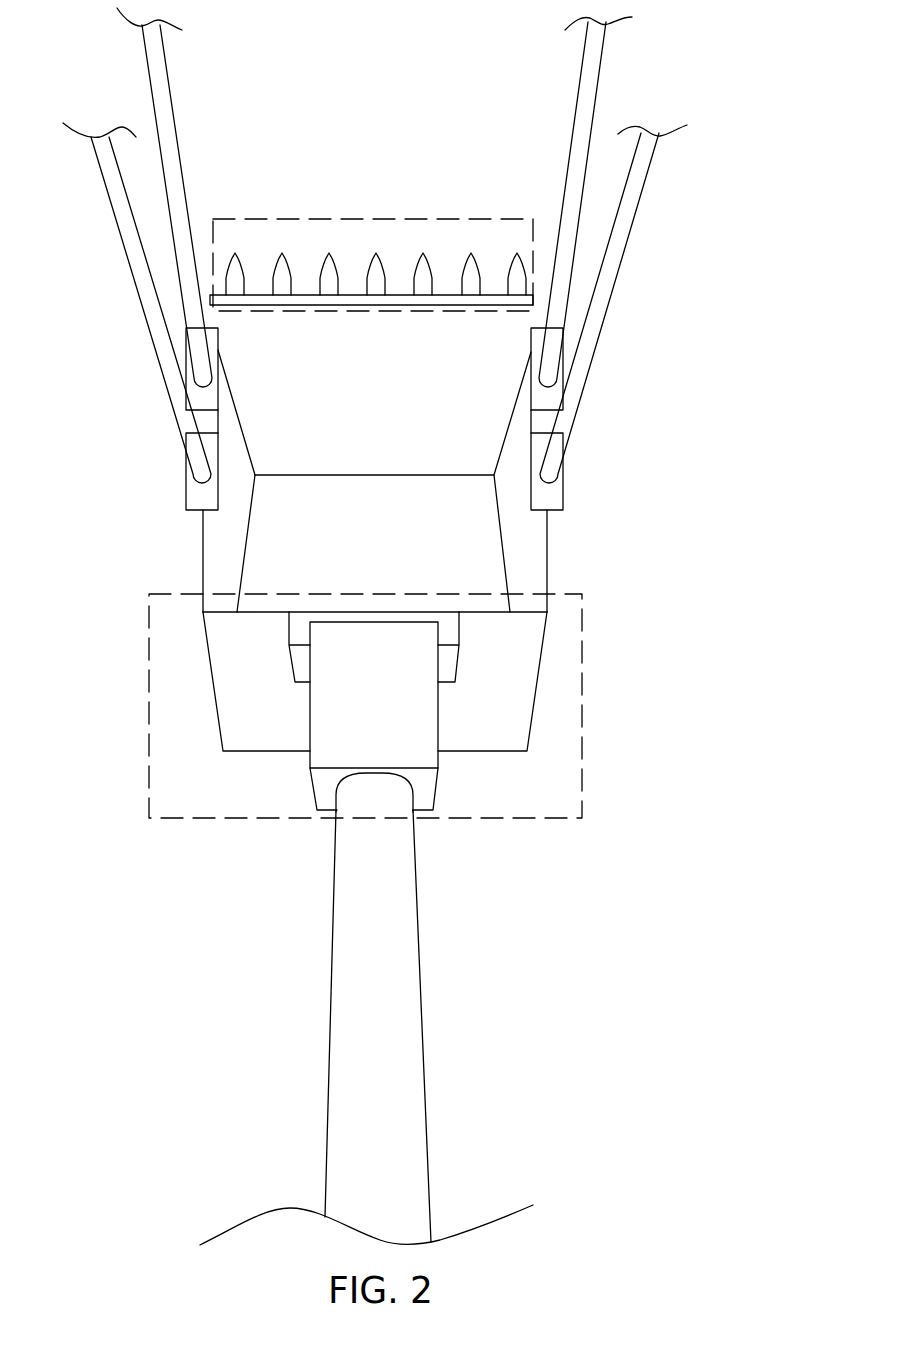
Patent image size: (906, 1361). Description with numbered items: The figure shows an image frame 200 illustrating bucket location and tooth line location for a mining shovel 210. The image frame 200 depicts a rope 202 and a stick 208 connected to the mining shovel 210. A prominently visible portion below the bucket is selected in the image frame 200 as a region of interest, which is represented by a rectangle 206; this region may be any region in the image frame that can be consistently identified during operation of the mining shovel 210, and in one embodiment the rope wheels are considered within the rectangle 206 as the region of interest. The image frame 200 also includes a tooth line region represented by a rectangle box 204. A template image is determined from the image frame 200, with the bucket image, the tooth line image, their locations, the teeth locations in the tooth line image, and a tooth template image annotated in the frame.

The image frame 200 is at (640, 1017).
The rope 202 is at (160, 78).
The rectangle box 204 is at (374, 218).
The rectangle 206 is at (583, 683).
The stick 208 is at (334, 1068).
The mining shovel 210 is at (478, 550).